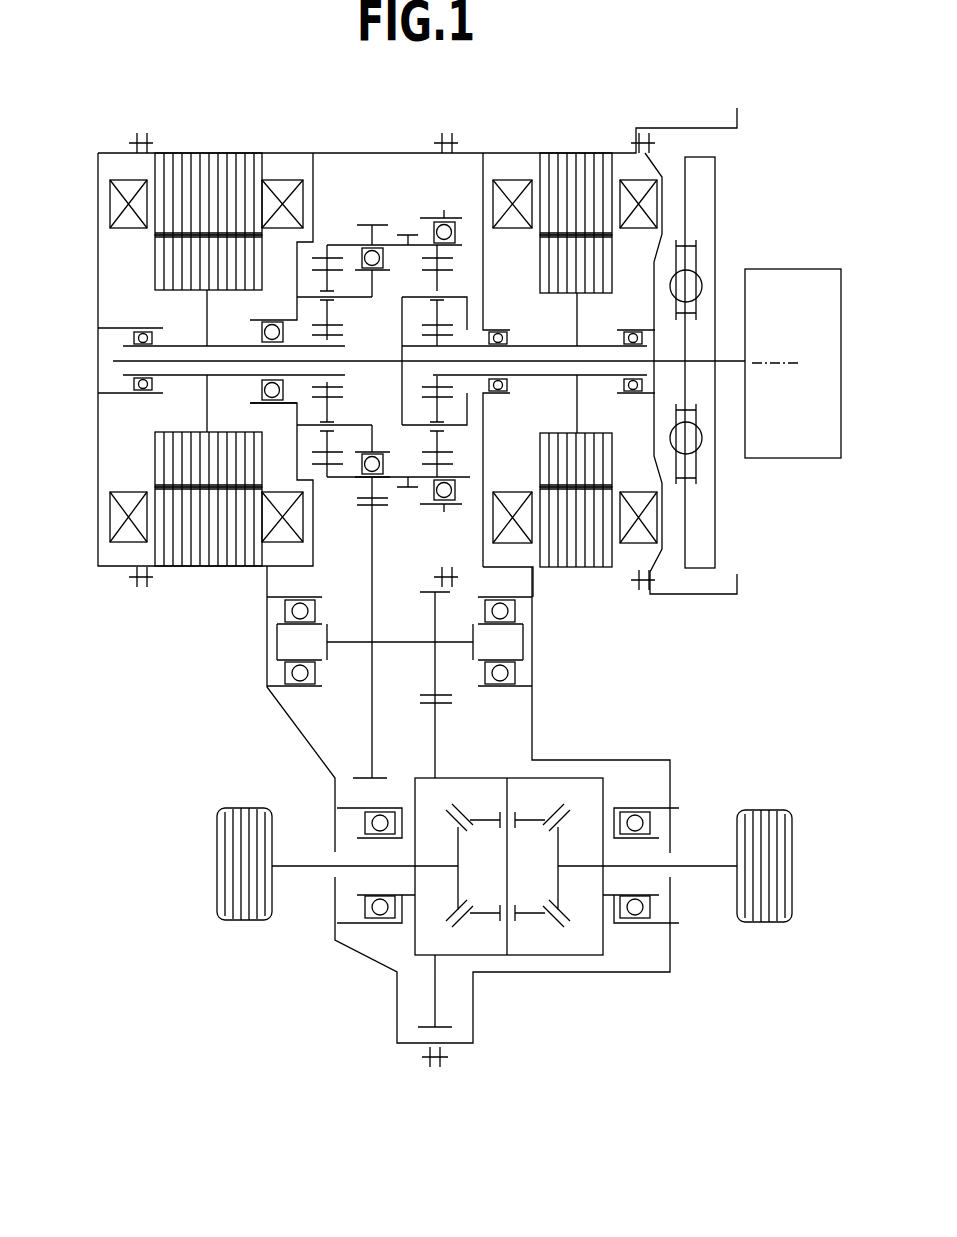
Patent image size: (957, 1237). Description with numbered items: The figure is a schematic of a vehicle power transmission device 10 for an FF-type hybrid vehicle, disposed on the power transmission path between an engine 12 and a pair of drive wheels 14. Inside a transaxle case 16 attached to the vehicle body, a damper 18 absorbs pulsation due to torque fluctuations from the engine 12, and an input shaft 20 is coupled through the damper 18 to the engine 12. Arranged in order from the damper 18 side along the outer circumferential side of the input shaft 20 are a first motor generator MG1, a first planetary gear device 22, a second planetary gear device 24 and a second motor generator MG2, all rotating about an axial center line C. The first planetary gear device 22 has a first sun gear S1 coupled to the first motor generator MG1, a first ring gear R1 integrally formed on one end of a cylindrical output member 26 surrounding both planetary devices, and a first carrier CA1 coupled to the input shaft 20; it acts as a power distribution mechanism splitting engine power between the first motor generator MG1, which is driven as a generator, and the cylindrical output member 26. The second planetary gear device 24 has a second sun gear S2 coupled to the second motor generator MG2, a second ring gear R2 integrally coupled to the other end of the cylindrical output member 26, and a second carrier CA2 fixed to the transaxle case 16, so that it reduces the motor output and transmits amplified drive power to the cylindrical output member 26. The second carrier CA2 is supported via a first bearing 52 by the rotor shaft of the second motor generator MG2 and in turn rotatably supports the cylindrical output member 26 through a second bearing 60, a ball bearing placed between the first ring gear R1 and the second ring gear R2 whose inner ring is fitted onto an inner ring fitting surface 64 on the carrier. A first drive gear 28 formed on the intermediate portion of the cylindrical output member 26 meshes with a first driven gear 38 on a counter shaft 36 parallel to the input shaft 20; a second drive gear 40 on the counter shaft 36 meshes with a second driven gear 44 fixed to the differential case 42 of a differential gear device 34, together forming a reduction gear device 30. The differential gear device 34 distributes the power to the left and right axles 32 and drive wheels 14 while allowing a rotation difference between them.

The vehicle power transmission device 10 is at (115, 100).
The engine 12 is at (797, 343).
The drive wheels 14 is at (243, 918).
The transaxle case 16 is at (400, 152).
The damper 18 is at (703, 283).
The input shaft 20 is at (672, 365).
The first planetary gear device 22 is at (428, 317).
The second planetary gear device 24 is at (346, 323).
The cylindrical output member 26 is at (343, 243).
The first drive gear 28 is at (380, 225).
The reduction gear device 30 is at (459, 709).
The axles 32 is at (308, 869).
The differential gear device 34 is at (507, 892).
The counter shaft 36 is at (403, 644).
The first driven gear 38 is at (380, 508).
The second drive gear 40 is at (441, 590).
The differential case 42 is at (551, 778).
The second driven gear 44 is at (443, 705).
The first bearing 52 is at (266, 333).
The second bearing 60 is at (368, 466).
The inner ring fitting surface 64 is at (443, 503).
The first motor generator MG1 is at (577, 149).
The second motor generator MG2 is at (208, 149).
The first ring gear R1 is at (446, 268).
The first sun gear S1 is at (428, 335).
The first carrier CA1 is at (412, 292).
The second sun gear S2 is at (337, 392).
The second ring gear R2 is at (317, 466).
The second carrier CA2 is at (340, 428).
The axial center line C is at (768, 362).